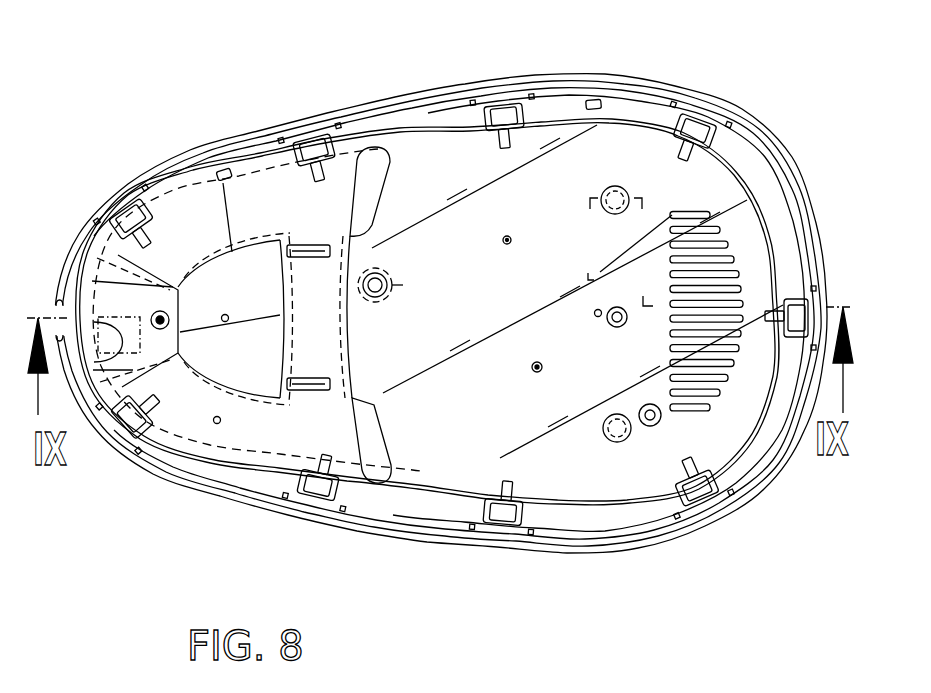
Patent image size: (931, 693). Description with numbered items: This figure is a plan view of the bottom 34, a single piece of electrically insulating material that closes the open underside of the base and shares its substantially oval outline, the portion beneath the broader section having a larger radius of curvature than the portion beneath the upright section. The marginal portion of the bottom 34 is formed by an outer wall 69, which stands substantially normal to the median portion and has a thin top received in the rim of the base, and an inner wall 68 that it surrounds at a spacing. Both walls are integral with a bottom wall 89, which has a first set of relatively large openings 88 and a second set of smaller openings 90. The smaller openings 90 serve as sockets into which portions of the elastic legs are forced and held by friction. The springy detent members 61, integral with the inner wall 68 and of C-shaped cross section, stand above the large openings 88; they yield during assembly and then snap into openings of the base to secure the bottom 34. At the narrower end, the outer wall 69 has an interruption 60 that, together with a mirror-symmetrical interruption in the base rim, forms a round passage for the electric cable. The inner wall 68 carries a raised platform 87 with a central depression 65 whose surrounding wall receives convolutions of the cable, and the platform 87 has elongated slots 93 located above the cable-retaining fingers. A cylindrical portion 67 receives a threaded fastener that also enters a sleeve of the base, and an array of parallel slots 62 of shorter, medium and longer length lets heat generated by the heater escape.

The bottom 34 is at (268, 112).
The interruption 60 is at (57, 303).
The detent member 61 is at (140, 222).
The slot 62 is at (672, 244).
The depression 65 is at (248, 303).
The cylindrical portion 67 is at (395, 273).
The inner wall 68 is at (415, 138).
The outer wall 69 is at (350, 106).
The platform 87 is at (233, 252).
The opening 88 is at (497, 92).
The bottom wall 89 is at (424, 122).
The opening 90 is at (222, 170).
The slot 93 is at (294, 244).